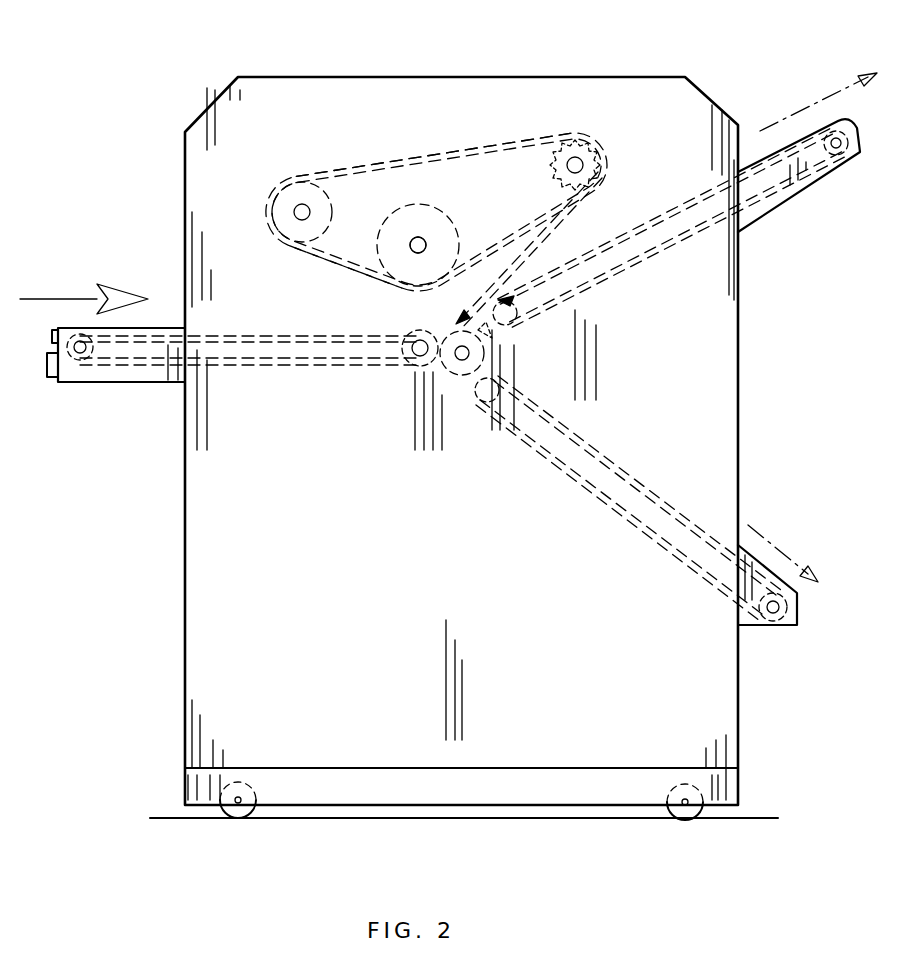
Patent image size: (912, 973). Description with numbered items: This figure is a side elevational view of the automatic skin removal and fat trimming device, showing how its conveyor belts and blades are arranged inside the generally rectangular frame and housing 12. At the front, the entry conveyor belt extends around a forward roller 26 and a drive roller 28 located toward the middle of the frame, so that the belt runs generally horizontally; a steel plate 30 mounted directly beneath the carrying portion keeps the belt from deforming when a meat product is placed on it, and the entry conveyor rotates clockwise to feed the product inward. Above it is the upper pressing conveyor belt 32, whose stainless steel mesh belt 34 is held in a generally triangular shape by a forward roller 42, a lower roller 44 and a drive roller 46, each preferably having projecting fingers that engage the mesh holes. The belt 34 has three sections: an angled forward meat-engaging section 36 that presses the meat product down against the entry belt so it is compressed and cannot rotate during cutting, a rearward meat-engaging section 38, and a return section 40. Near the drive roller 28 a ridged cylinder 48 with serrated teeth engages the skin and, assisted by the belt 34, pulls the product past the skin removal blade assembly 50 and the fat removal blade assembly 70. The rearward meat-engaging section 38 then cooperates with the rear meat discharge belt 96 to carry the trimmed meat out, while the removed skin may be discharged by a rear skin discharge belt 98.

The frame and housing 12 is at (662, 730).
The forward roller 26 is at (76, 355).
The drive roller 28 is at (417, 347).
The steel plate 30 is at (150, 340).
The upper pressing conveyor belt 32 is at (357, 165).
The belt 34 is at (505, 145).
The forward meat-engaging section 36 is at (335, 262).
The rearward meat-engaging section 38 is at (538, 224).
The return section 40 is at (440, 150).
The forward roller 42 is at (302, 212).
The lower roller 44 is at (418, 242).
The drive roller 46 is at (575, 165).
The ridged cylinder 48 is at (457, 355).
The skin removal blade assembly 50 is at (488, 328).
The fat removal blade assembly 70 is at (480, 303).
The rear meat discharge belt 96 is at (660, 250).
The rear skin discharge belt 98 is at (665, 505).